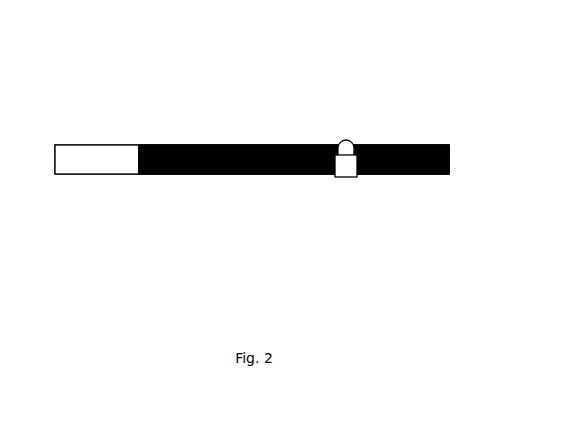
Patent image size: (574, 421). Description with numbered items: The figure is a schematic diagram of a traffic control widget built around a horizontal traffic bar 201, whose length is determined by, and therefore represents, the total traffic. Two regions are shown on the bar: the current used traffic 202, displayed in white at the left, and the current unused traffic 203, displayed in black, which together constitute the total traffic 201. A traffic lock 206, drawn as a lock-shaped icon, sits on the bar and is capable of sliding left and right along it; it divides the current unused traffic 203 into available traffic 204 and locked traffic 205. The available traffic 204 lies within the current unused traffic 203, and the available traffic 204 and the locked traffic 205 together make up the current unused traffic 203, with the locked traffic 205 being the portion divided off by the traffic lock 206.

The traffic bar 201 is at (58, 63).
The current used traffic 202 is at (55, 121).
The current unused traffic 203 is at (137, 121).
The available traffic 204 is at (342, 201).
The locked traffic 205 is at (447, 201).
The traffic lock 206 is at (337, 178).